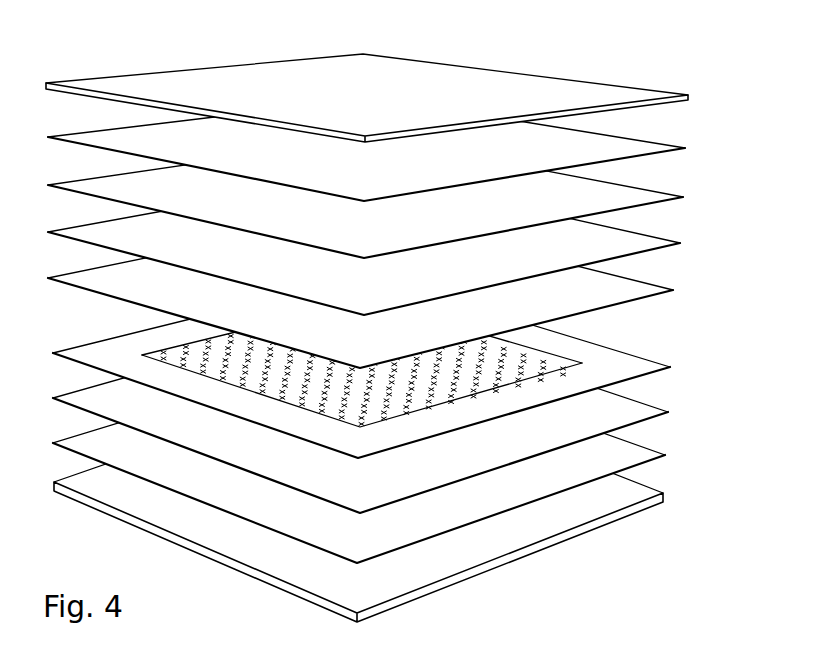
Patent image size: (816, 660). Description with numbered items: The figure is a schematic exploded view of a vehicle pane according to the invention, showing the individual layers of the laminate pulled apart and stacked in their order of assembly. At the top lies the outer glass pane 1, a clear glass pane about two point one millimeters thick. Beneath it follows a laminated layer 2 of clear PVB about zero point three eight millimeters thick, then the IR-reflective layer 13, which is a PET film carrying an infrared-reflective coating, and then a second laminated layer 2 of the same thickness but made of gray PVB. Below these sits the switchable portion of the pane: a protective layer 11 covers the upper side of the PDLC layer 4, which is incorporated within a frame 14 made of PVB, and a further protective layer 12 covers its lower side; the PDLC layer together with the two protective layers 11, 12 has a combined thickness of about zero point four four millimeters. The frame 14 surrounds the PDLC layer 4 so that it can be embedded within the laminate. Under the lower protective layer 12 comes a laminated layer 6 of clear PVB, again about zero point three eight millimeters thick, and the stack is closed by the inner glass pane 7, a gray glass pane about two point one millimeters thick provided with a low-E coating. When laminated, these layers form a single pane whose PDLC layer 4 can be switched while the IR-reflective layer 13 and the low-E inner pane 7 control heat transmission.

The outer glass pane 1 is at (637, 95).
The laminated layer 2 is at (628, 243).
The IR-reflective layer 13 is at (630, 195).
The protective layer 11 is at (620, 290).
The PDLC layer 4 is at (555, 365).
The frame 14 is at (620, 368).
The protective layer 12 is at (617, 413).
The laminated layer 6 is at (613, 457).
The inner glass pane 7 is at (612, 497).